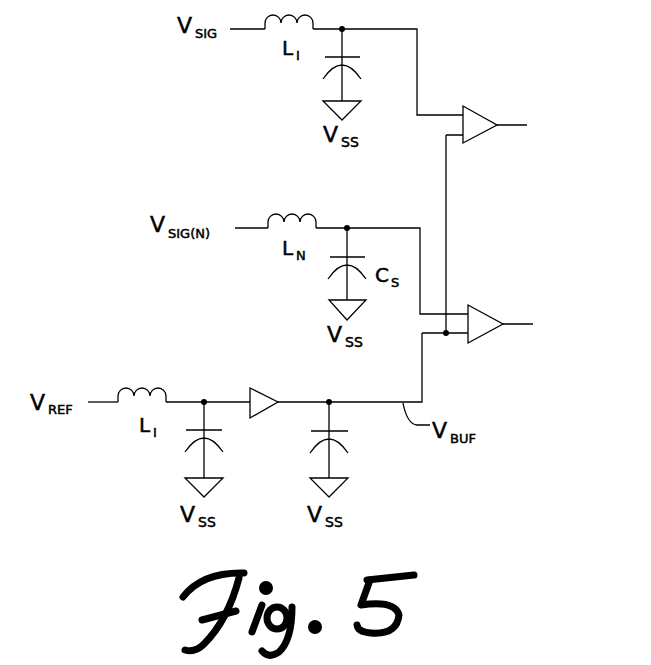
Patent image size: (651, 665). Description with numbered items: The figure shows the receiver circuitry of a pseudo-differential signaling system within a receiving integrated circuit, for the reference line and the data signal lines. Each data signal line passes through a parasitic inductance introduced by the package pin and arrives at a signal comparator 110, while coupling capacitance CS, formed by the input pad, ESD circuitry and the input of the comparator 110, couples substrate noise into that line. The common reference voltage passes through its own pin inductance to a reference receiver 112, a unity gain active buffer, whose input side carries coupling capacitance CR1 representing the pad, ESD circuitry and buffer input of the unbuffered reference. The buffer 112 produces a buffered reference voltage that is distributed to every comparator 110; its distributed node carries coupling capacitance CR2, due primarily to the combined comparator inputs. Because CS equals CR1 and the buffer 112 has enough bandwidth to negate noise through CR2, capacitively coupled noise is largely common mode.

The signal comparator 110 is at (471, 119).
The reference receiver 112 is at (262, 396).
The coupling capacitance CS is at (359, 74).
The coupling capacitance of the unbuffered reference signal CR1 is at (229, 449).
The coupling capacitance of the buffered reference signal CR2 is at (353, 449).